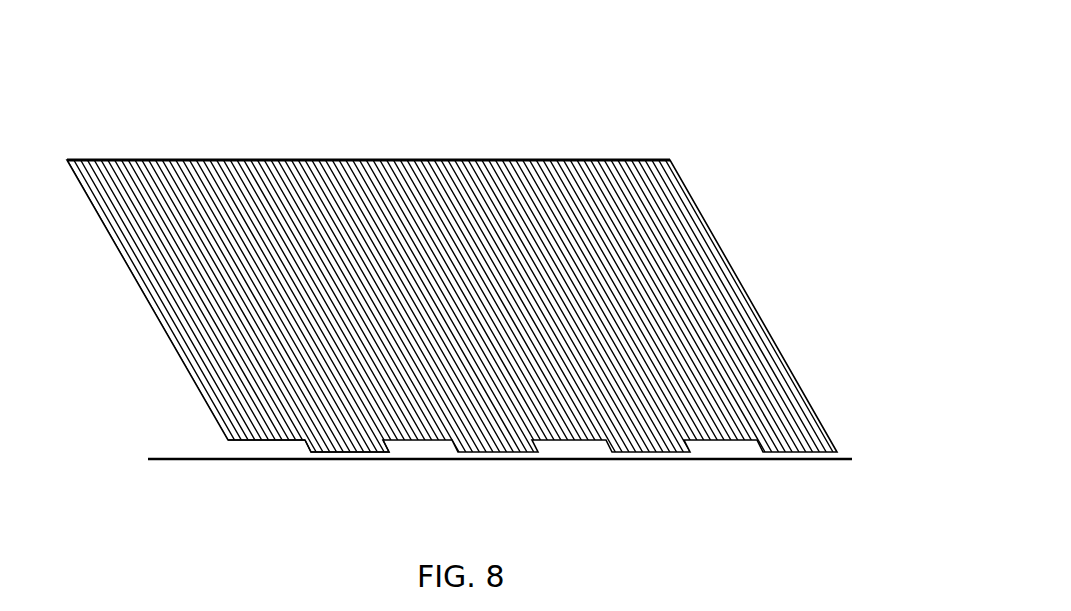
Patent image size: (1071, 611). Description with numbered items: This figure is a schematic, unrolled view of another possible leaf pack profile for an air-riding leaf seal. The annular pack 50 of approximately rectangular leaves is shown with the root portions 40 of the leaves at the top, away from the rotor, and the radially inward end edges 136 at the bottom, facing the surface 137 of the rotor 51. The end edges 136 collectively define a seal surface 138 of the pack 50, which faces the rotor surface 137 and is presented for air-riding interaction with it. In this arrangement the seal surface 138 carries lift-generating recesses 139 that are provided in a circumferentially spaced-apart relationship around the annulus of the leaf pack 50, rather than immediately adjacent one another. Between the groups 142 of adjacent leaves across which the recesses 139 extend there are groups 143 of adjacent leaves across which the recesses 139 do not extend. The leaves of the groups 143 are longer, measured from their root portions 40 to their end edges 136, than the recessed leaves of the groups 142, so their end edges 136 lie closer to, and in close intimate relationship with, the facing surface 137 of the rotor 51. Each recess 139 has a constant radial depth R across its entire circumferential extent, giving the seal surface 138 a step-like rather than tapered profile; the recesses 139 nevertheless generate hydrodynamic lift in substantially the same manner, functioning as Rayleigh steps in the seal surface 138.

The root portions 40 is at (368, 225).
The annular pack 50 is at (712, 216).
The rotor 51 is at (198, 482).
The end edges 136 is at (381, 476).
The surface of rotor 137 is at (163, 457).
The seal surface 138 is at (246, 446).
The lift-generating recesses 139 is at (397, 443).
The groups of adjacent leaves across which the recesses extend 142 is at (216, 153).
The groups of adjacent leaves across which the recesses do not extend 143 is at (372, 153).
The radial depth R is at (585, 424).